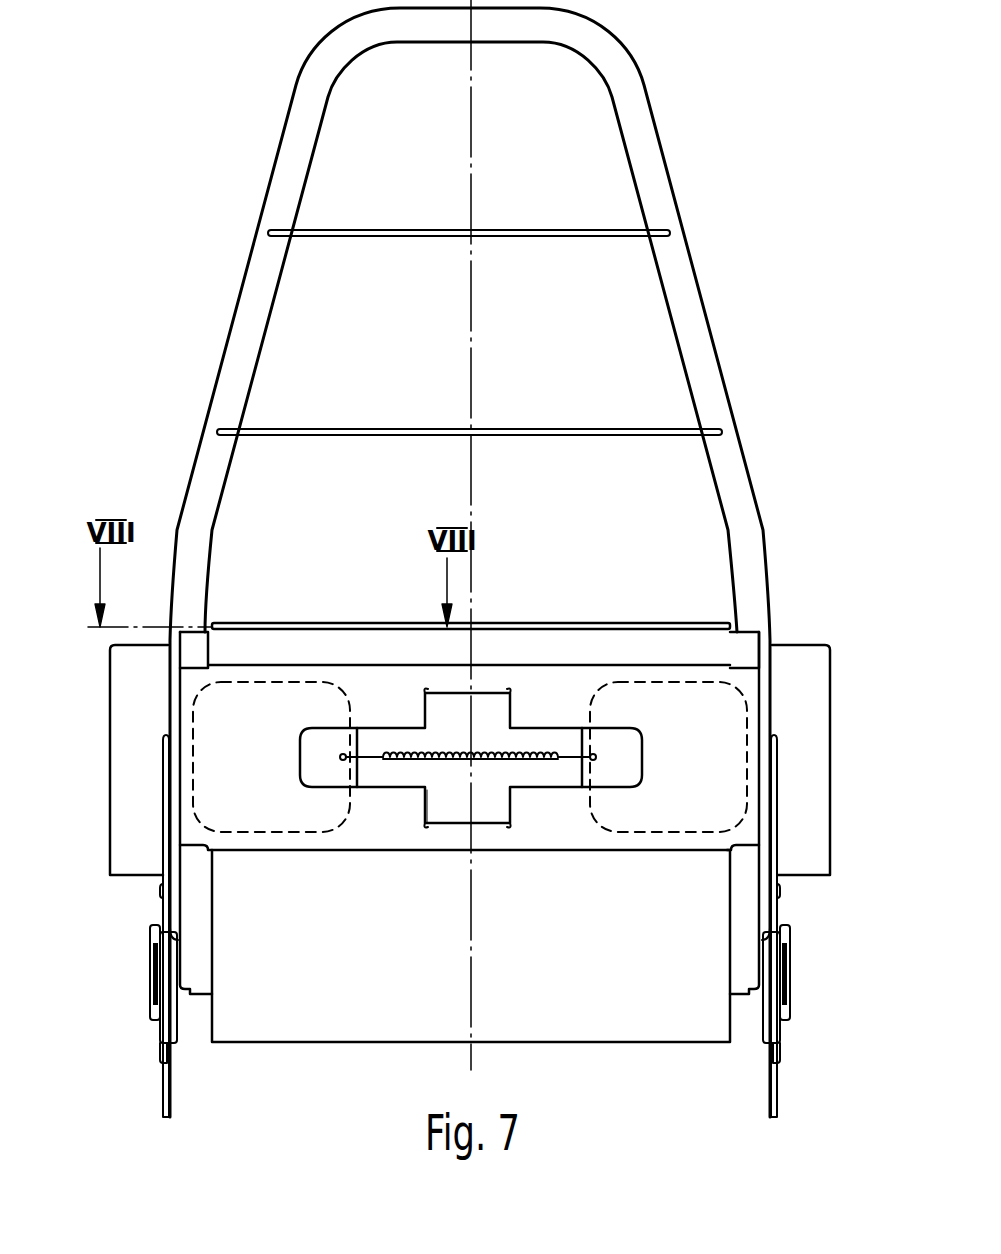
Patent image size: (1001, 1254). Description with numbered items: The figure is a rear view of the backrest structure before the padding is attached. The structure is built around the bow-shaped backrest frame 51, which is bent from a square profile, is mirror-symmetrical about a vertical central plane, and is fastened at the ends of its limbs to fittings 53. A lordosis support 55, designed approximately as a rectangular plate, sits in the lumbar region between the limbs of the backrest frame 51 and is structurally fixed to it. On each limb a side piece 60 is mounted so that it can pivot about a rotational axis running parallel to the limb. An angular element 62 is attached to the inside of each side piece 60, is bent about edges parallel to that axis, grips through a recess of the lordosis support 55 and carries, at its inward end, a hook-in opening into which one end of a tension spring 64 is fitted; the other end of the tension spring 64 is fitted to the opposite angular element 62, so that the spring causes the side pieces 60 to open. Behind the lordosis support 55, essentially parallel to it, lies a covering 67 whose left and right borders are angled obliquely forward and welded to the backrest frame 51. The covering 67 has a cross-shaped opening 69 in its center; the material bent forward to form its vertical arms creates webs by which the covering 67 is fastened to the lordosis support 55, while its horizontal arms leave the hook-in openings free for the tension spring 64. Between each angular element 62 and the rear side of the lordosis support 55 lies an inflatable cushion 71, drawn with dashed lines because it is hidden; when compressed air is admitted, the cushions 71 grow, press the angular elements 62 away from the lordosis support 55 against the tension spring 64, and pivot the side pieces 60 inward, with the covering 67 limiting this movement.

The backrest frame 51 is at (690, 328).
The fittings 53 is at (155, 1002).
The lordosis support 55 is at (307, 1010).
The side piece 60 is at (133, 686).
The angular element 62 is at (323, 765).
The tension spring 64 is at (473, 763).
The covering 67 is at (290, 695).
The cross-shaped opening 69 is at (423, 798).
The cushion 71 is at (225, 838).